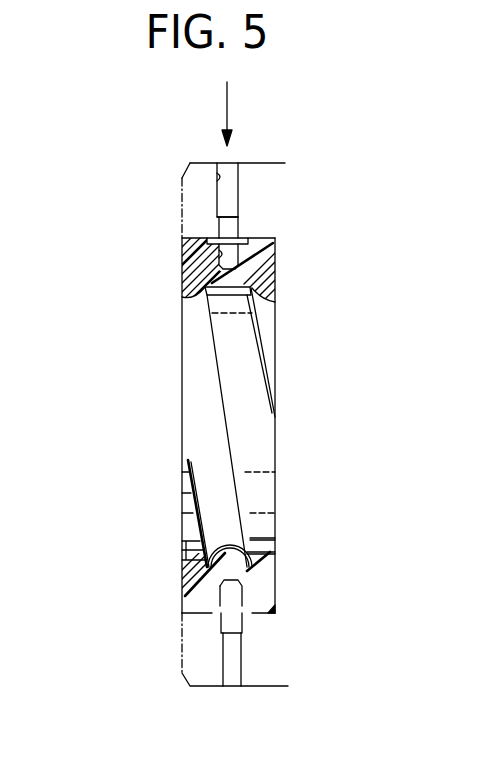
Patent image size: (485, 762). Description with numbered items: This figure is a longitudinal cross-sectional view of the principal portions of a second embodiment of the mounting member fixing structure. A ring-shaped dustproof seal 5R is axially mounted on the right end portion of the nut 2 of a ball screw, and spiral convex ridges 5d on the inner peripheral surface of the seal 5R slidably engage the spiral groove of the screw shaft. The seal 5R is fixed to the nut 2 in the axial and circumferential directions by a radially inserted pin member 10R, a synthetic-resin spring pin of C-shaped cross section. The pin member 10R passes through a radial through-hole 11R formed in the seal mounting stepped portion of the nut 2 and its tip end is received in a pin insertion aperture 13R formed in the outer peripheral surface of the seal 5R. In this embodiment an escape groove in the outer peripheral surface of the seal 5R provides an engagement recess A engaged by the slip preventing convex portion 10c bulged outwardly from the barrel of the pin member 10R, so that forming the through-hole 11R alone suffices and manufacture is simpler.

The nut 2 is at (273, 163).
The seal 5R is at (270, 266).
The spiral convex ridge 5d is at (206, 486).
The pin member 10R is at (239, 207).
The engagement recess A is at (248, 238).
The radial through-hole 11R is at (217, 178).
The slip preventing convex portion 10c is at (230, 220).
The pin insertion aperture 13R is at (218, 253).